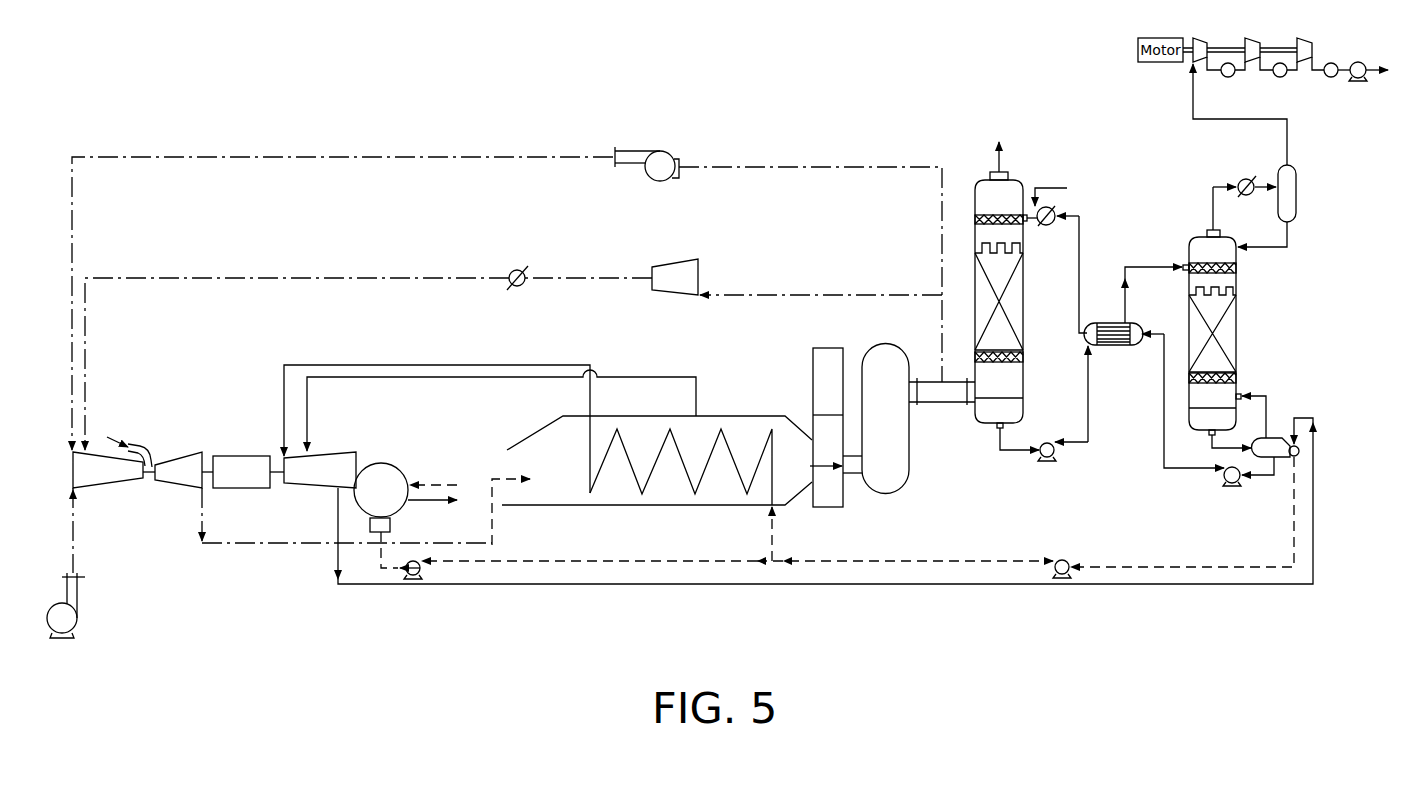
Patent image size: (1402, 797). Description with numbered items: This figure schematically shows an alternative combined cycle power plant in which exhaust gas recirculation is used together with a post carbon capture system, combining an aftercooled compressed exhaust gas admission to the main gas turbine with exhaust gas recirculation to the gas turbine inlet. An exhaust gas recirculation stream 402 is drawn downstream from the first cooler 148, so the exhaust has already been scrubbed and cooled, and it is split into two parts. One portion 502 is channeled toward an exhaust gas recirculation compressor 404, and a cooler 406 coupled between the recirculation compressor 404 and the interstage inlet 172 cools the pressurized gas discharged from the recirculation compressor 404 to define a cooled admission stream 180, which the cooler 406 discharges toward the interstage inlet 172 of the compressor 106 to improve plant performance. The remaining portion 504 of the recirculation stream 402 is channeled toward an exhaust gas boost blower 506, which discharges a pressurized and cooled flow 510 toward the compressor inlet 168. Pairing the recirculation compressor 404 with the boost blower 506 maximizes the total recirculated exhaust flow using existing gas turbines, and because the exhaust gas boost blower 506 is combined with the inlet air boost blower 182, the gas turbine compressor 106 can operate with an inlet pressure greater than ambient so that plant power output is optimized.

The compressor 106 is at (110, 488).
The first cooler 148 is at (909, 457).
The compressor inlet 168 is at (57, 471).
The interstage inlet 172 is at (95, 423).
The cooled admission stream 180 is at (85, 337).
The inlet air boost blower 182 is at (78, 615).
The exhaust gas recirculation stream 402 is at (940, 340).
The exhaust gas recirculation compressor 404 is at (665, 260).
The cooler 406 is at (517, 269).
The portion 502 is at (772, 293).
The remaining portion 504 is at (802, 167).
The exhaust gas boost blower 506 is at (645, 151).
The pressurized and cooled flow 510 is at (398, 157).